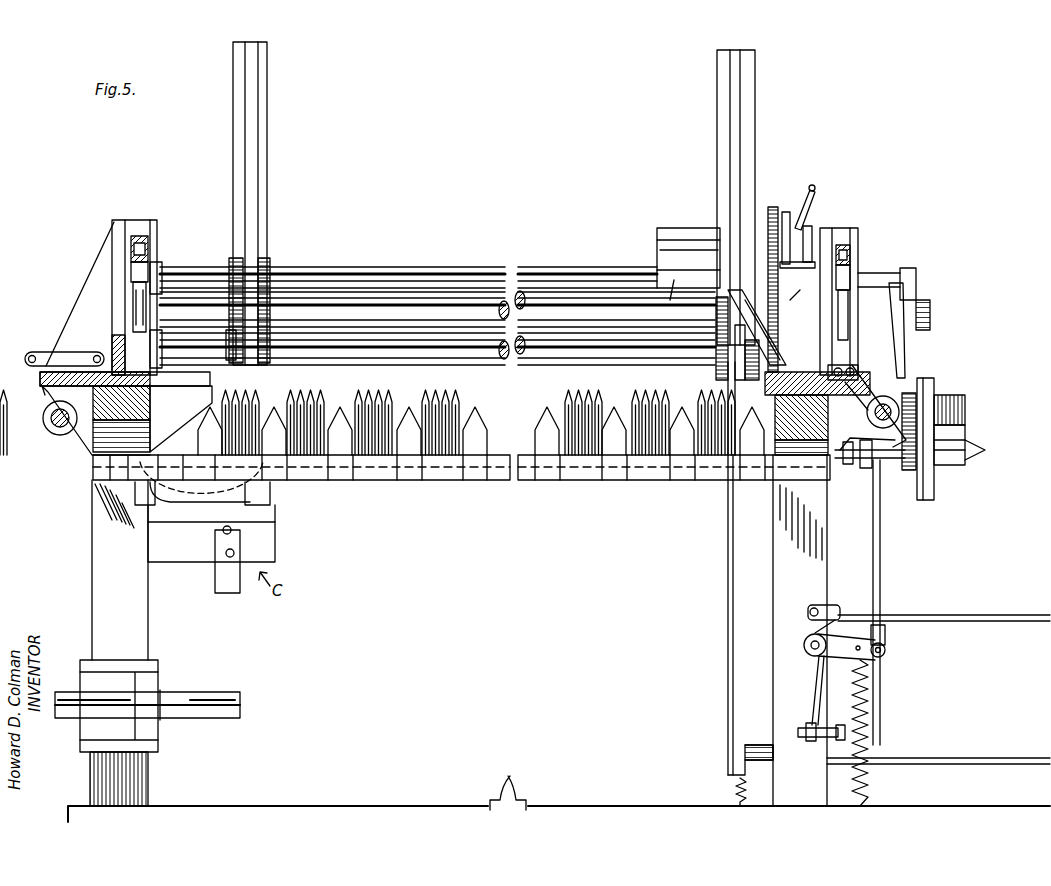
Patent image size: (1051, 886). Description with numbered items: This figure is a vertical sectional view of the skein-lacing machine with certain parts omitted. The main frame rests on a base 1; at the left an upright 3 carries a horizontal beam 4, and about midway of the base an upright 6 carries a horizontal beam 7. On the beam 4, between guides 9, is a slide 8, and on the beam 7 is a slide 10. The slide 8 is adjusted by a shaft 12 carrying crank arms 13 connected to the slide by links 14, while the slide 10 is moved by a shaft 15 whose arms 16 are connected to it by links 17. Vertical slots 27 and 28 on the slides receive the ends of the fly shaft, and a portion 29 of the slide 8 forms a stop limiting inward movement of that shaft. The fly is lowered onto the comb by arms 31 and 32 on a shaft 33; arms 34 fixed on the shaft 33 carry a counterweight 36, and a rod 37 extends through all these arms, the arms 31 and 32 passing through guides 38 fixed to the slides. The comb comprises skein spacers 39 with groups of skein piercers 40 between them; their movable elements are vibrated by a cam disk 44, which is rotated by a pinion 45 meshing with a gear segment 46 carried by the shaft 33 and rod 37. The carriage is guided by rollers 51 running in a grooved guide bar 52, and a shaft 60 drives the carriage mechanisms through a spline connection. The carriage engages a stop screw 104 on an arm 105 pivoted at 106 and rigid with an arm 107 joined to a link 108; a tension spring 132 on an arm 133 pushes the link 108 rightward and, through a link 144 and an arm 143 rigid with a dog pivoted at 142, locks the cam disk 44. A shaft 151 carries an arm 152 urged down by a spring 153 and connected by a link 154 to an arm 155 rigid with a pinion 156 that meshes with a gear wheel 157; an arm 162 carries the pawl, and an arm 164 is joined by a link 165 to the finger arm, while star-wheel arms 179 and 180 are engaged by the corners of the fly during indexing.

The base 1 is at (559, 795).
The upright 3 is at (94, 563).
The horizontal beam 4 is at (133, 416).
The upright 6 is at (820, 506).
The horizontal beam 7 is at (800, 414).
The slide 8 is at (108, 265).
The guides 9 is at (181, 372).
The slide 10 is at (776, 396).
The shaft 12 is at (52, 432).
The crank arms 13 is at (40, 379).
The links 14 is at (72, 352).
The shaft 15 is at (868, 416).
The arms 16 is at (870, 395).
The links 17 is at (852, 366).
The vertical slot 27 is at (115, 237).
The vertical slot 28 is at (822, 284).
The stop portion 29 is at (153, 262).
The arm 31 is at (140, 236).
The arm 32 is at (854, 240).
The shaft 33 is at (475, 300).
The arms 34 is at (262, 165).
The counterweight 36 is at (522, 358).
The rod 37 is at (462, 272).
The guides 38 is at (152, 222).
The skein spacers 39 is at (340, 405).
The skein piercers 40 is at (320, 392).
The cam disk 44 is at (935, 490).
The pinion 45 is at (905, 470).
The gear segment 46 is at (914, 342).
The rollers 51 is at (222, 492).
The grooved guide bar 52 is at (372, 480).
The shaft 60 is at (240, 697).
The stop screw 104 is at (806, 740).
The arm 105 is at (812, 698).
The pivot 106 is at (806, 642).
The arm 107 is at (812, 606).
The link 108 is at (1018, 620).
The tension spring 132 is at (868, 716).
The arm 133 is at (884, 656).
The pivot 142 is at (846, 456).
The arm 143 is at (866, 468).
The link 144 is at (880, 566).
The shaft 151 is at (978, 762).
The arm 152 is at (744, 748).
The spring 153 is at (738, 793).
The link 154 is at (730, 582).
The arm 155 is at (748, 372).
The pinion 156 is at (780, 334).
The gear wheel 157 is at (770, 215).
The arm 162 is at (786, 210).
The arm 164 is at (813, 228).
The link 165 is at (812, 188).
The arm 179 is at (657, 294).
The arm 180 is at (697, 228).